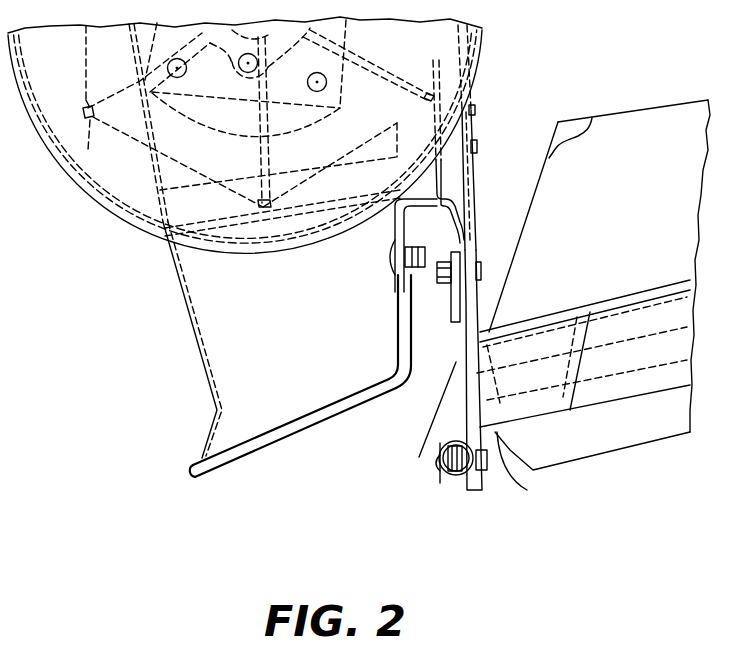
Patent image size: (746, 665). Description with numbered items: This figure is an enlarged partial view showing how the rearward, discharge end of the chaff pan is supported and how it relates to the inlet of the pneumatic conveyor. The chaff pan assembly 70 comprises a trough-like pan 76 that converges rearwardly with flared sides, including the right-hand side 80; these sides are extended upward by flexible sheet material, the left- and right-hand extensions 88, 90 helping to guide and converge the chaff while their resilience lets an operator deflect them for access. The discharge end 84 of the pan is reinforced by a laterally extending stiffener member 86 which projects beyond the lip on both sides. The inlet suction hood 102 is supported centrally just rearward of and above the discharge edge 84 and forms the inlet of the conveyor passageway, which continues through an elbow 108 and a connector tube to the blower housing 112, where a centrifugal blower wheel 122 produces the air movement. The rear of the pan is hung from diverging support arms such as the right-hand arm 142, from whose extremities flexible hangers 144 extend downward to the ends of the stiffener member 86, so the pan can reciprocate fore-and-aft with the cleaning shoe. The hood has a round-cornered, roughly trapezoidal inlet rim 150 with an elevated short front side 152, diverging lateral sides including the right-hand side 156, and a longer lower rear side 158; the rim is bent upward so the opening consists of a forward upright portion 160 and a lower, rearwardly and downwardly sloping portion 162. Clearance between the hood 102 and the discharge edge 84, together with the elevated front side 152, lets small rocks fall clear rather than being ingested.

The chaff pan assembly 70 is at (567, 472).
The pan 76 is at (525, 469).
The right-hand flared side 80 is at (641, 290).
The discharge end 84 is at (430, 438).
The stiffener member 86 is at (457, 485).
The left-hand extension 88 is at (572, 120).
The right-hand extension 90 is at (643, 107).
The inlet suction hood 102 is at (190, 413).
The elbow 108 is at (100, 66).
The blower housing 112 is at (97, 203).
The centrifugal blower wheel 122 is at (90, 138).
The right-hand support arm 142 is at (497, 188).
The flexible hanger 144 is at (460, 352).
The inlet rim 150 is at (284, 404).
The front side 152 is at (407, 293).
The right-hand lateral side 156 is at (362, 404).
The rear side 158 is at (187, 469).
The upright portion 160 is at (416, 357).
The sloping portion 162 is at (303, 428).